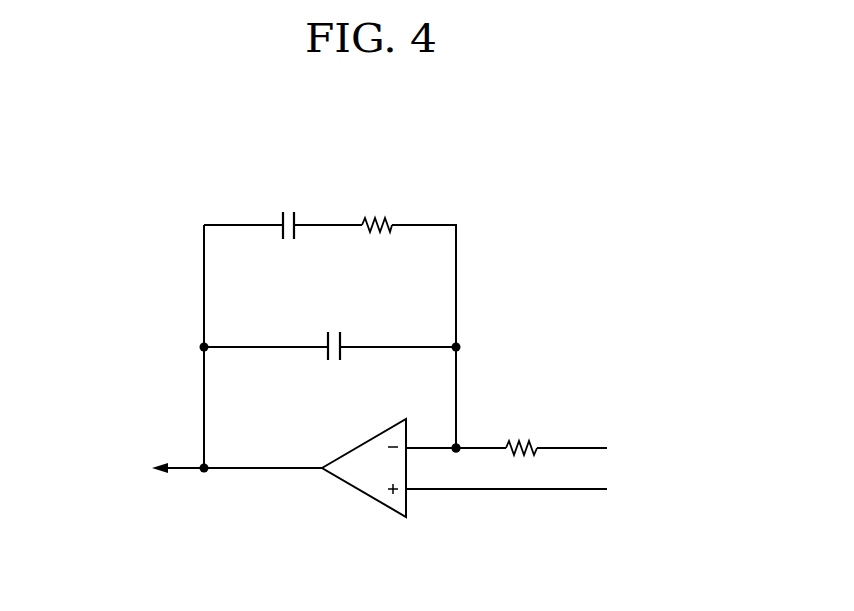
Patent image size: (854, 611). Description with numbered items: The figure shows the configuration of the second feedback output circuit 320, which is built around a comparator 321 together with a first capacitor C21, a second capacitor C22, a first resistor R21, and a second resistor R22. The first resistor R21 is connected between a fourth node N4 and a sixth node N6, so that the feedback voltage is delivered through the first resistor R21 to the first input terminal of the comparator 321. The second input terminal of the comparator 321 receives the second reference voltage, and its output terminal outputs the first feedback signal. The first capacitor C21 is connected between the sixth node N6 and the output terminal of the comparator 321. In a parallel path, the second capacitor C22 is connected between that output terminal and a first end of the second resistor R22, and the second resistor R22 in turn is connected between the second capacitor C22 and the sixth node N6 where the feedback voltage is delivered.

The second feedback output circuit 320 is at (490, 178).
The comparator 321 is at (362, 495).
The sixth node N6 is at (457, 446).
The fourth node N4 is at (572, 447).
The first capacitor C21 is at (333, 360).
The second capacitor C22 is at (286, 239).
The first resistor R21 is at (520, 433).
The second resistor R22 is at (375, 242).